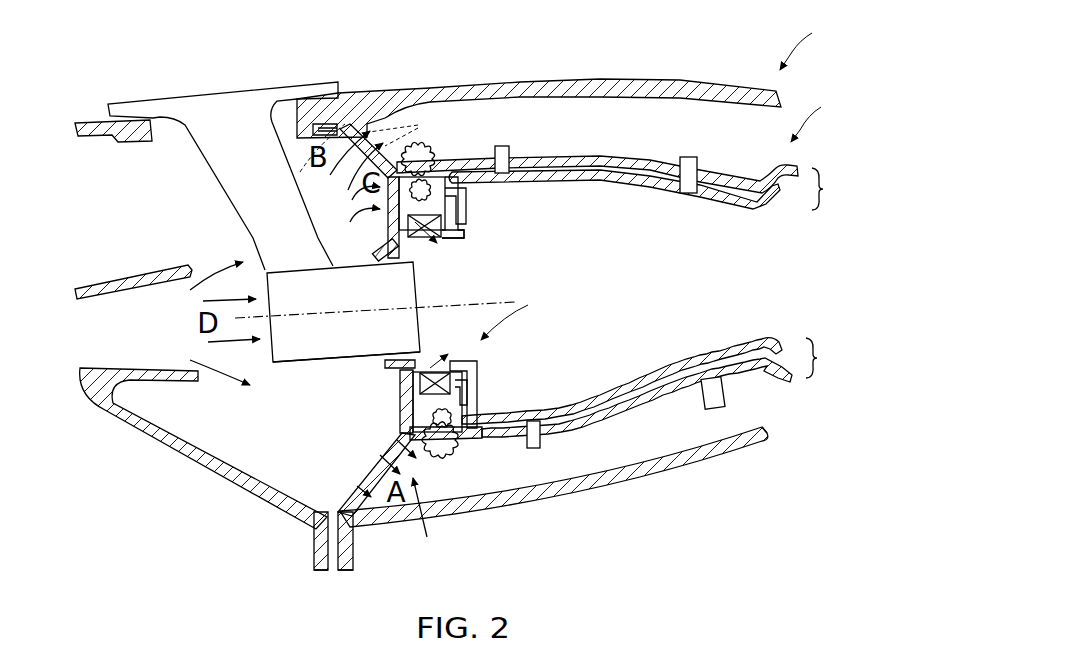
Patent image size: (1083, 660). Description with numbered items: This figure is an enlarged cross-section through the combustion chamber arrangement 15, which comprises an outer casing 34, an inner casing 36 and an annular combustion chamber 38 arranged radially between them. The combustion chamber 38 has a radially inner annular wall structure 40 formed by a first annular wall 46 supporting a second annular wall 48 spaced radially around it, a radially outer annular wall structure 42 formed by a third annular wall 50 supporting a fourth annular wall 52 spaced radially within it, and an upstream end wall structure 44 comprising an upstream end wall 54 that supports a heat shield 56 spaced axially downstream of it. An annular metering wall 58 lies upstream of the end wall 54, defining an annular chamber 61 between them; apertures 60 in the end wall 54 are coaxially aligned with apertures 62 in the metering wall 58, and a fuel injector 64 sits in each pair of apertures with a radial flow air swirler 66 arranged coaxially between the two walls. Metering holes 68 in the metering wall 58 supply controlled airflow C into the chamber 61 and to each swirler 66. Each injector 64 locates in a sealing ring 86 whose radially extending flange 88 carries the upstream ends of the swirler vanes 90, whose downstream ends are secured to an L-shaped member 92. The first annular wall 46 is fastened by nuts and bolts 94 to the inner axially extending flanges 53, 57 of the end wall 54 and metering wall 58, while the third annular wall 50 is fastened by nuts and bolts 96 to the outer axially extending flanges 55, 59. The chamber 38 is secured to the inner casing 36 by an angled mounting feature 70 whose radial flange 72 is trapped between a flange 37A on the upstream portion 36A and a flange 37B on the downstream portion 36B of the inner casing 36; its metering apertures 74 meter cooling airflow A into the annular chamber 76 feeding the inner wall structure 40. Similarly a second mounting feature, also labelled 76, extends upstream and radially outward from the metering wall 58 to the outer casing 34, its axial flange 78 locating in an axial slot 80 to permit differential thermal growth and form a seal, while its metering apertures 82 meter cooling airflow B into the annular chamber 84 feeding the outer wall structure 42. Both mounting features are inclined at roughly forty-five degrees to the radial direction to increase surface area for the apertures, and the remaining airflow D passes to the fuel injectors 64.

The combustion chamber arrangement 15 is at (810, 43).
The outer casing 34 is at (664, 81).
The inner casing 36 is at (757, 443).
The upstream portion of the inner casing 36A is at (195, 458).
The downstream portion of the inner casing 36B is at (688, 465).
The flange on the upstream portion of the inner casing 37A is at (313, 547).
The flange on the downstream portion of the inner casing 37B is at (355, 550).
The annular combustion chamber 38 is at (823, 119).
The radially inner annular wall structure 40 is at (815, 359).
The radially outer annular wall structure 42 is at (822, 190).
The upstream end wall structure 44 is at (480, 218).
The first annular wall 46 is at (750, 378).
The second annular wall 48 is at (748, 344).
The third annular wall 50 is at (741, 174).
The fourth annular wall 52 is at (745, 207).
The inner axially extending flange of the upstream end wall 53 is at (496, 450).
The upstream end wall 54 is at (478, 372).
The outer axially extending flange of the upstream end wall 55 is at (441, 160).
The heat shield 56 is at (480, 392).
The inner axially extending flange of the metering wall 57 is at (458, 448).
The annular metering wall 58 is at (399, 386).
The outer axially extending flange of the metering wall 59 is at (437, 152).
The apertures in the upstream end wall 60 is at (450, 255).
The annular chamber 61 is at (483, 406).
The apertures in the metering wall 62 is at (381, 263).
The fuel injector 64 is at (313, 340).
The radial flow air swirler 66 is at (398, 313).
The metering holes 68 is at (412, 405).
The mounting feature 70 is at (428, 484).
The annular flange 72 is at (335, 572).
The metering apertures 74 is at (382, 482).
The annular chamber / second mounting feature 76 is at (392, 118).
The annular flange 78 is at (343, 125).
The axial slot 80 is at (316, 124).
The metering apertures 82 is at (405, 125).
The annular chamber 84 is at (577, 146).
The sealing ring 86 is at (401, 257).
The radially extending flange 88 is at (418, 362).
The vanes 90 is at (466, 438).
The L-shaped member 92 is at (470, 240).
The fasteners 94 is at (452, 462).
The fasteners 96 is at (466, 194).